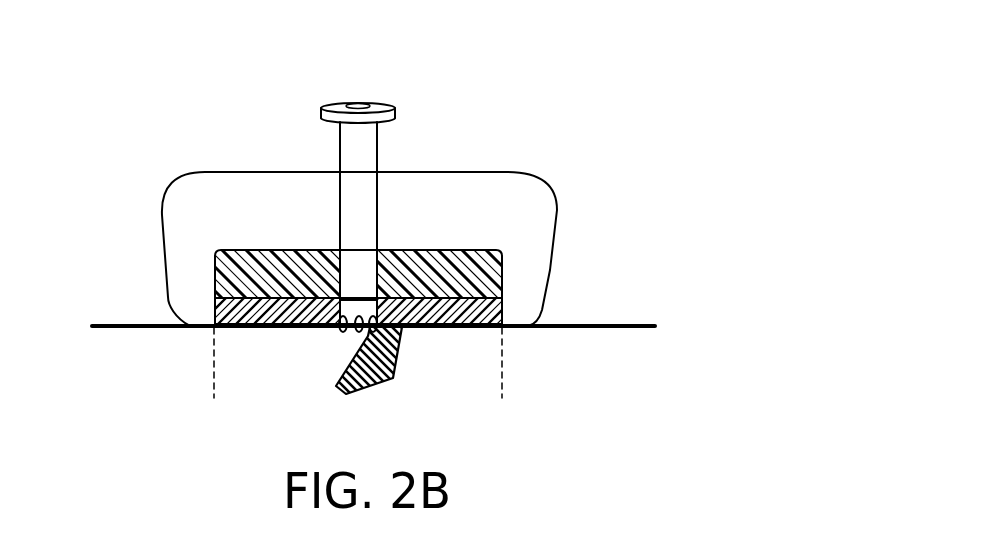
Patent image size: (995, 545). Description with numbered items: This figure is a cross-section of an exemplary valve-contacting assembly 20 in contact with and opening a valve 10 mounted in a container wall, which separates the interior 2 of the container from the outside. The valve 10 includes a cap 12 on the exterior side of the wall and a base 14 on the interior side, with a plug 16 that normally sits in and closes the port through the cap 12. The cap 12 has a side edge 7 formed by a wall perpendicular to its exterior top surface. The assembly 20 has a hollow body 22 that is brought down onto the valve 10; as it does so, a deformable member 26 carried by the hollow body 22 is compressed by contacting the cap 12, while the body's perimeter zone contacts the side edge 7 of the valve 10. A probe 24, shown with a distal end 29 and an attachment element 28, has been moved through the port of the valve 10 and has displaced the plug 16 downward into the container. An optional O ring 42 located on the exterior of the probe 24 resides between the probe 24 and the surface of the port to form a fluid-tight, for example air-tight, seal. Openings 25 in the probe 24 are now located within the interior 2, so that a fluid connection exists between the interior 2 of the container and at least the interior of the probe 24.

The interior 2 is at (655, 369).
The side edge 7 is at (215, 309).
The valve 10 is at (409, 377).
The cap 12 is at (234, 332).
The base 14 is at (213, 387).
The plug 16 is at (393, 379).
The valve-contacting assembly 20 is at (578, 162).
The hollow body 22 is at (193, 213).
The probe 24 is at (362, 145).
The openings 25 is at (343, 333).
The deformable member 26 is at (235, 272).
The attachment element 28 is at (416, 68).
The distal end 29 is at (359, 104).
The O ring 42 is at (418, 322).